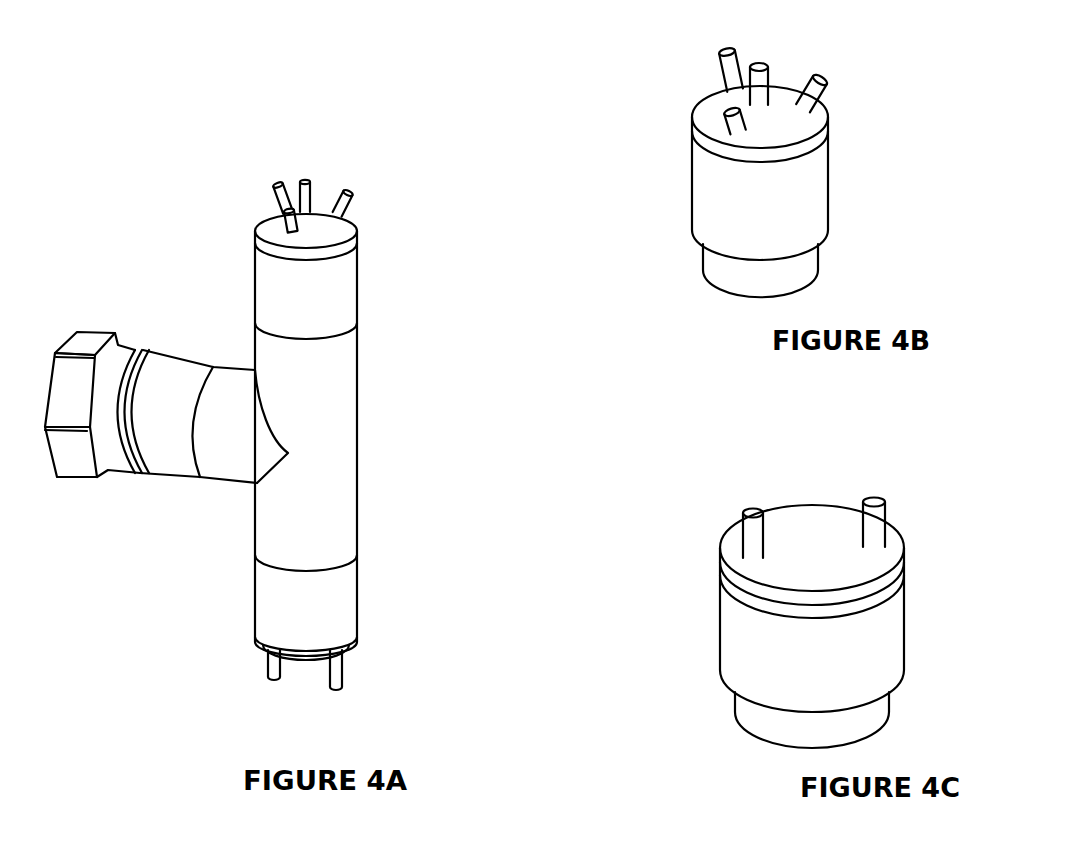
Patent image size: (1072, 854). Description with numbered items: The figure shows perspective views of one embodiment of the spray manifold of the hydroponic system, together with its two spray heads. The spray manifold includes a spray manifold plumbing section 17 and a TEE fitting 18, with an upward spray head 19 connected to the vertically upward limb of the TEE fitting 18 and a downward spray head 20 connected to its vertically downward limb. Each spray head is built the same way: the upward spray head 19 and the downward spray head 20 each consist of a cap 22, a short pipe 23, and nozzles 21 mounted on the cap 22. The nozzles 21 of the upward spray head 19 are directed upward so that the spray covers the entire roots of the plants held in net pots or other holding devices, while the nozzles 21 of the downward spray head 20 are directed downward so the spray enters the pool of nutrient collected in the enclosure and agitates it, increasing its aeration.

In FIG. 4A, the spray manifold plumbing section 17 is at (177, 428).
In FIG. 4A, the TEE fitting 18 is at (355, 463).
In FIG. 4A, the upward spray head 19 is at (365, 287).
In FIG. 4B, the upward spray head 19 is at (736, 168).
In FIG. 4A, the downward spray head 20 is at (365, 607).
In FIG. 4C, the downward spray head 20 is at (802, 623).
In FIG. 4A, the nozzles 21 is at (347, 203).
In FIG. 4B, the nozzles 21 is at (815, 97).
In FIG. 4C, the nozzles 21 is at (887, 523).
In FIG. 4B, the cap 22 is at (827, 180).
In FIG. 4C, the cap 22 is at (897, 630).
In FIG. 4B, the short pipe 23 is at (802, 263).
In FIG. 4C, the short pipe 23 is at (873, 712).